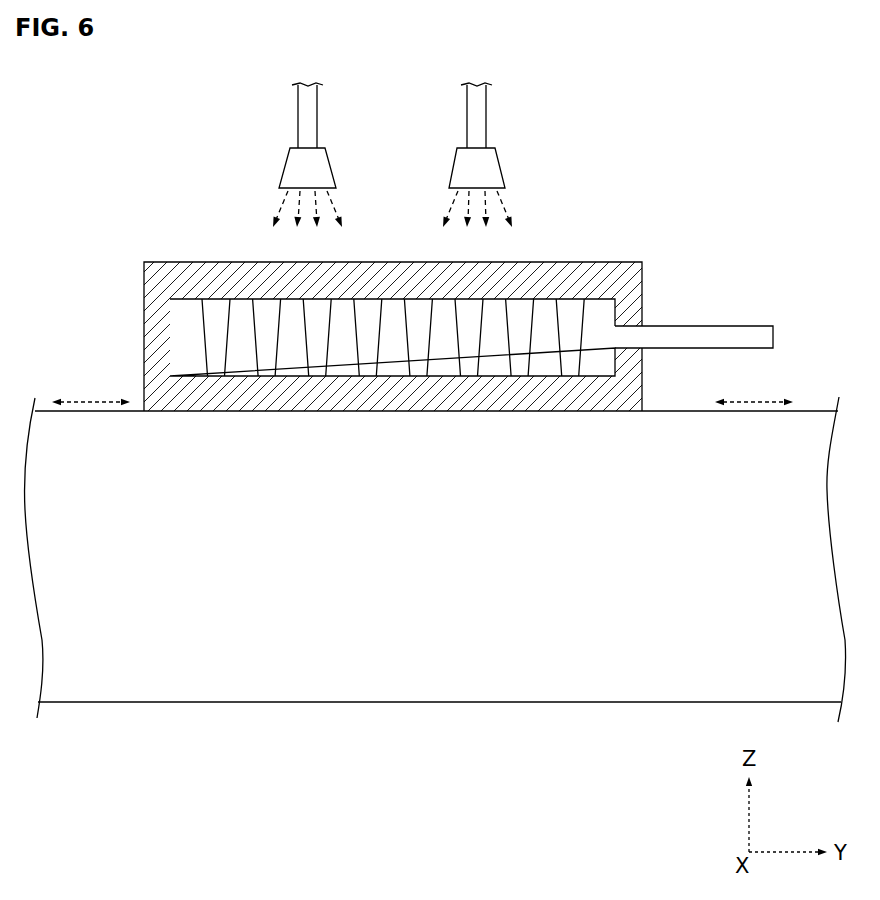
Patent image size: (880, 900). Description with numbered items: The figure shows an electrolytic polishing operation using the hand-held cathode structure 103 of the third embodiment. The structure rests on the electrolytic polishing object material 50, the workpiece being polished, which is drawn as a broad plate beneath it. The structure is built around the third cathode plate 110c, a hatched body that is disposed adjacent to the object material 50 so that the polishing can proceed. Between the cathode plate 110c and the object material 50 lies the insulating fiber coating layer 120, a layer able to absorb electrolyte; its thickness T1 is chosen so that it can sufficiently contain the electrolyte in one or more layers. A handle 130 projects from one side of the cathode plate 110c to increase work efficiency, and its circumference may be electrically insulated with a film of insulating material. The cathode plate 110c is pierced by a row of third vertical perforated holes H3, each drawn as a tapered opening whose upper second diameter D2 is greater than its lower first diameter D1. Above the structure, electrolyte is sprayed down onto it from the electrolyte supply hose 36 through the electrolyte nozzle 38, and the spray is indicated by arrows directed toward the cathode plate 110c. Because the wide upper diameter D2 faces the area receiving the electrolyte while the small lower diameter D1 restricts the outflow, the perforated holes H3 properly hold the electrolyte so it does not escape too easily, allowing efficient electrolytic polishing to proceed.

The electrolyte supply hose 36 is at (475, 112).
The electrolyte nozzle 38 is at (465, 164).
The electrolytic polishing object material 50 is at (824, 398).
The hand-held cathode structure 103 is at (730, 197).
The third cathode plate 110c is at (597, 310).
The insulating fiber coating layer 120 is at (538, 280).
The handle 130 is at (710, 330).
The third vertical perforated hole H3 is at (568, 315).
The first diameter D1 is at (280, 365).
The second diameter D2 is at (284, 310).
The thickness T1 is at (642, 377).